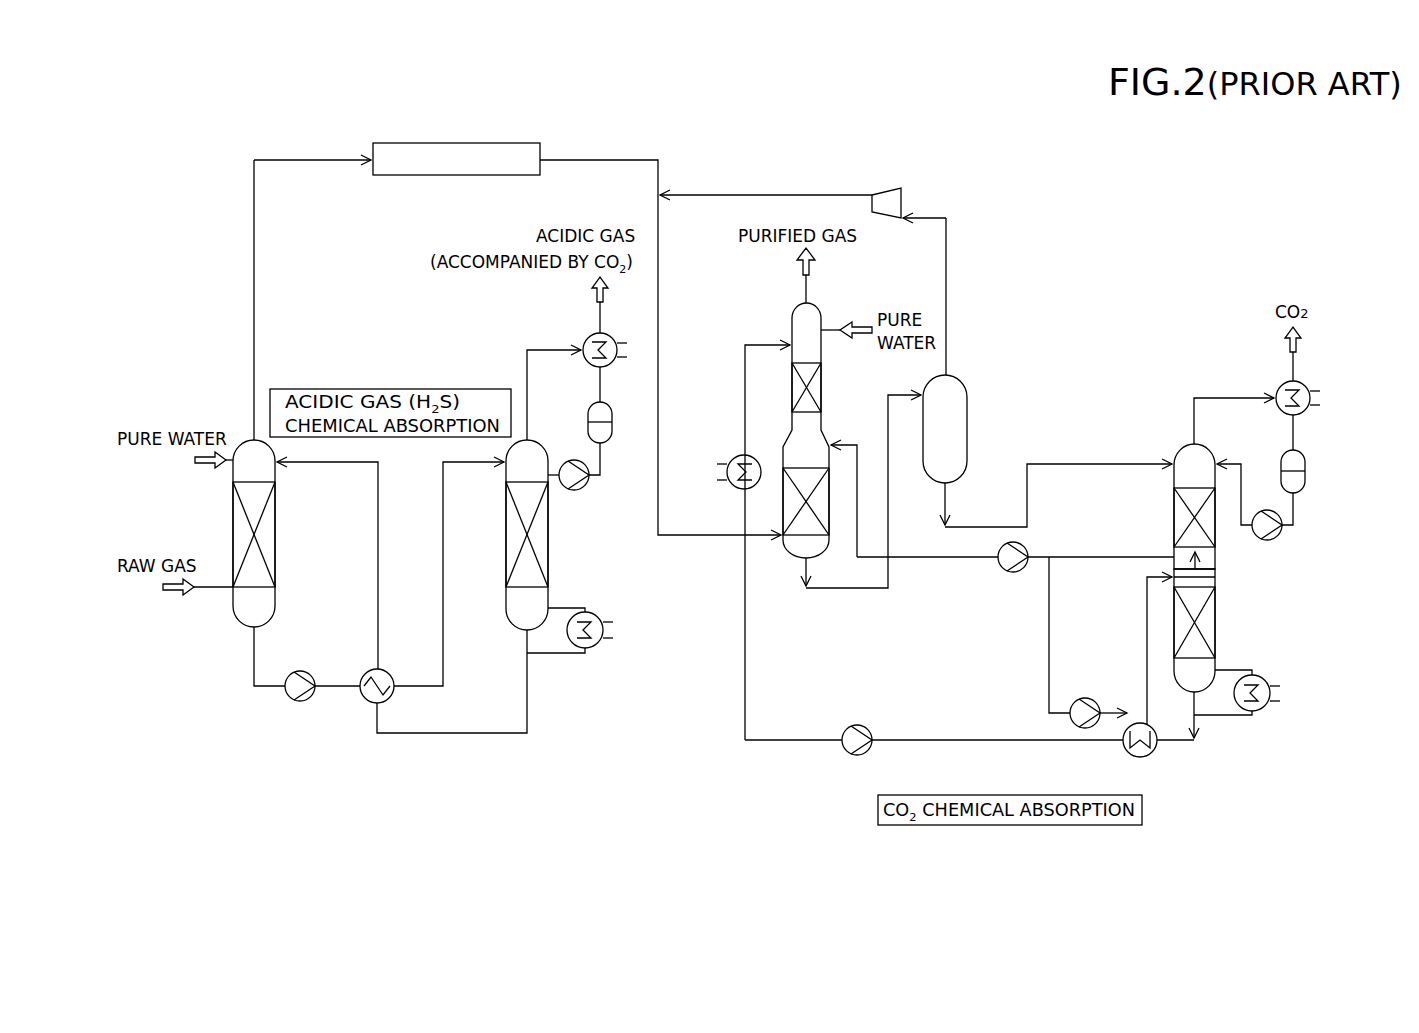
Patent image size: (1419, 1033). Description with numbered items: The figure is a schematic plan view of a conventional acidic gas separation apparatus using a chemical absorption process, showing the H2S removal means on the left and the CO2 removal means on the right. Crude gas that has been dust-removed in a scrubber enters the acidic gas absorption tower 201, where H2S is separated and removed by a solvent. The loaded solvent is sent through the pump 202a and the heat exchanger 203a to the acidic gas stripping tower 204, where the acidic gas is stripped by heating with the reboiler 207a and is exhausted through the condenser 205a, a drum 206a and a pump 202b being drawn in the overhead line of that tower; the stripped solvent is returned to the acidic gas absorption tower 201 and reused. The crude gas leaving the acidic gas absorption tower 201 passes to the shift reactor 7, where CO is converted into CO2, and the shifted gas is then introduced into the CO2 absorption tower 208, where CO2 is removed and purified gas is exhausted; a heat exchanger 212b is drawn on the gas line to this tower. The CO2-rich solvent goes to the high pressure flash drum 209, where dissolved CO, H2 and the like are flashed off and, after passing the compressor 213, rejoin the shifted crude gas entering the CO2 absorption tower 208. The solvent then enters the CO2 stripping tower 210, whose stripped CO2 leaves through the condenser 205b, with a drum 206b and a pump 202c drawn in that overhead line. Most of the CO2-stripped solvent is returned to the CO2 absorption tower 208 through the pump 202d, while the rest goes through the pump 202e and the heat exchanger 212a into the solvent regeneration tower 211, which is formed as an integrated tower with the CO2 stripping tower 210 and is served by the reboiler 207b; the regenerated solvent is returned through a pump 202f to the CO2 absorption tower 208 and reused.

The shift reactor 7 is at (455, 143).
The acidic gas absorption tower 201 is at (245, 440).
The pump 202a is at (312, 652).
The pump 202b is at (572, 490).
The pump 202c is at (1280, 532).
The pump 202d is at (1013, 572).
The pump 202e is at (1078, 699).
The pump 202f is at (868, 726).
The heat exchanger 203a is at (364, 698).
The acidic gas stripping tower 204 is at (548, 540).
The condenser 205a is at (590, 338).
The condenser 205b is at (1310, 392).
The drum 206a is at (588, 418).
The drum 206b is at (1306, 470).
The reboiler 207a is at (600, 648).
The reboiler 207b is at (1263, 712).
The CO2 absorption tower 208 is at (790, 306).
The high pressure flash drum 209 is at (956, 378).
The CO2 stripping tower 210 is at (1174, 500).
The solvent regeneration tower 211 is at (1215, 600).
The heat exchanger 212a is at (1150, 754).
The heat exchanger 212b is at (735, 456).
The compressor 213 is at (880, 193).